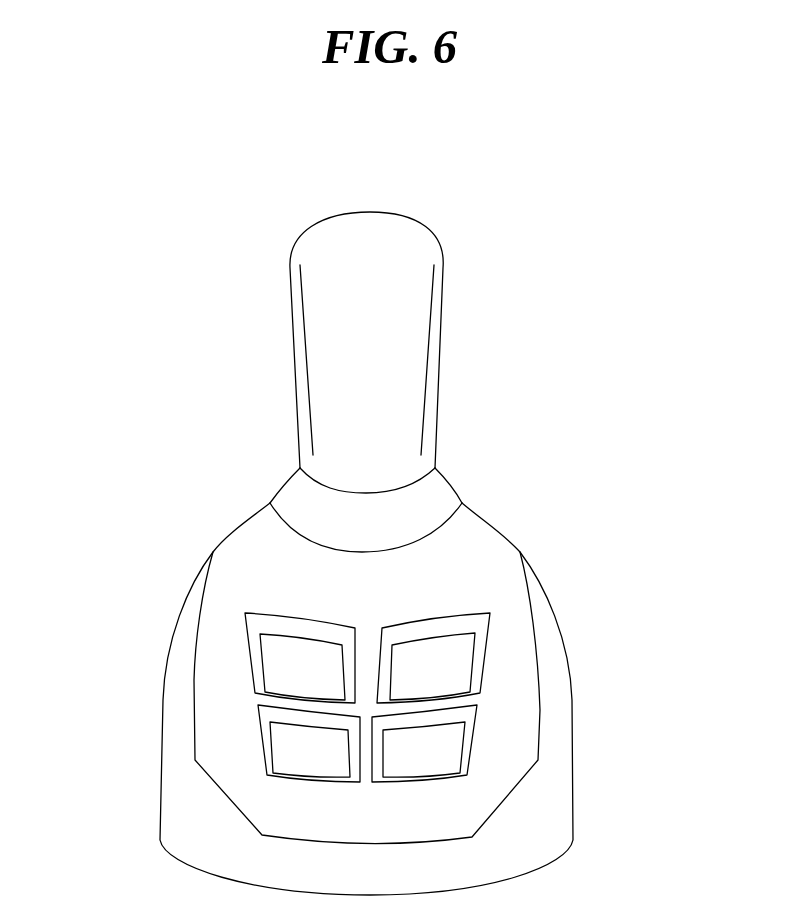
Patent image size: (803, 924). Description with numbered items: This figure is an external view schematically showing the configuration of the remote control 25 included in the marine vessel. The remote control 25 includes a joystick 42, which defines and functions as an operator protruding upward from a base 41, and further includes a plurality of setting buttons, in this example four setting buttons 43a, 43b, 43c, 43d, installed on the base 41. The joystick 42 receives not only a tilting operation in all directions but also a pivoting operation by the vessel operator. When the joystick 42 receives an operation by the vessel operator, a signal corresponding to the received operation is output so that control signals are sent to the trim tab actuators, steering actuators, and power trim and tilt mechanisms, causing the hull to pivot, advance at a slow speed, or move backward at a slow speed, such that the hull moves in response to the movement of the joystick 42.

The remote control 25 is at (528, 191).
The base 41 is at (573, 760).
The joystick 42 is at (440, 364).
The setting button 43a is at (273, 663).
The setting button 43b is at (283, 745).
The setting button 43c is at (462, 663).
The setting button 43d is at (452, 745).